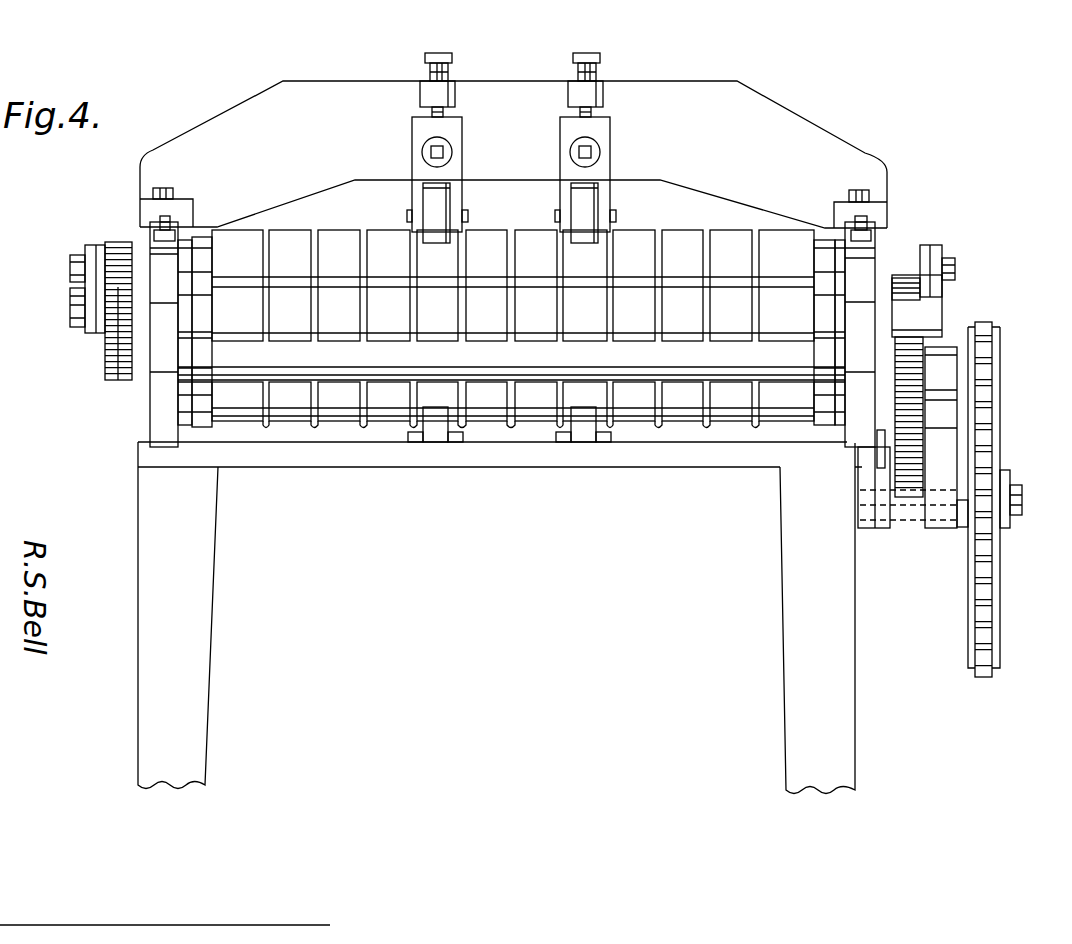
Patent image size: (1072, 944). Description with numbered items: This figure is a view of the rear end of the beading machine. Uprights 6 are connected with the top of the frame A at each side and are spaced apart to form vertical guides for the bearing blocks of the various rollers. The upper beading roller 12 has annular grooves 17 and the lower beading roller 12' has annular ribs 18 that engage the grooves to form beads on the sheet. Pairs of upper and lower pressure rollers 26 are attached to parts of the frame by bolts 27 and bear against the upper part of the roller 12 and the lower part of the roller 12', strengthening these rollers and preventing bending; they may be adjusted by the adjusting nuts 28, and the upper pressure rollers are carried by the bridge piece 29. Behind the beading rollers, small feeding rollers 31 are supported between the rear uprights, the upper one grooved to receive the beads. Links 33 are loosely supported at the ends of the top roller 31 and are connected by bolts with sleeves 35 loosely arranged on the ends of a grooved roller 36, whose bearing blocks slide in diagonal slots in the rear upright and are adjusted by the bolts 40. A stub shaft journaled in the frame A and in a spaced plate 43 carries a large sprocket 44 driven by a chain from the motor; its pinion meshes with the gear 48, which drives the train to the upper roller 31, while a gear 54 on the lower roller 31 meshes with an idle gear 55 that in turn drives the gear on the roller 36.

The upright 6 is at (158, 407).
The upper beading roller 12 is at (513, 268).
The lower beading roller 12' is at (513, 442).
The annular grooves 17 is at (316, 230).
The annular ribs 18 is at (316, 428).
The pressure rollers 26 is at (592, 209).
The bolts 27 is at (598, 152).
The adjusting nuts 28 is at (587, 56).
The bridge piece 29 is at (471, 103).
The small feeding rollers 31 is at (483, 283).
The links 33 is at (92, 250).
The sleeves 35 is at (935, 317).
The roller 36 is at (513, 315).
The bolts 40 is at (171, 215).
The plate 43 is at (950, 457).
The large sprocket 44 is at (995, 592).
The gear 48 is at (913, 490).
The gear 54 is at (125, 330).
The idle gear 55 is at (115, 243).
The frame A is at (792, 577).